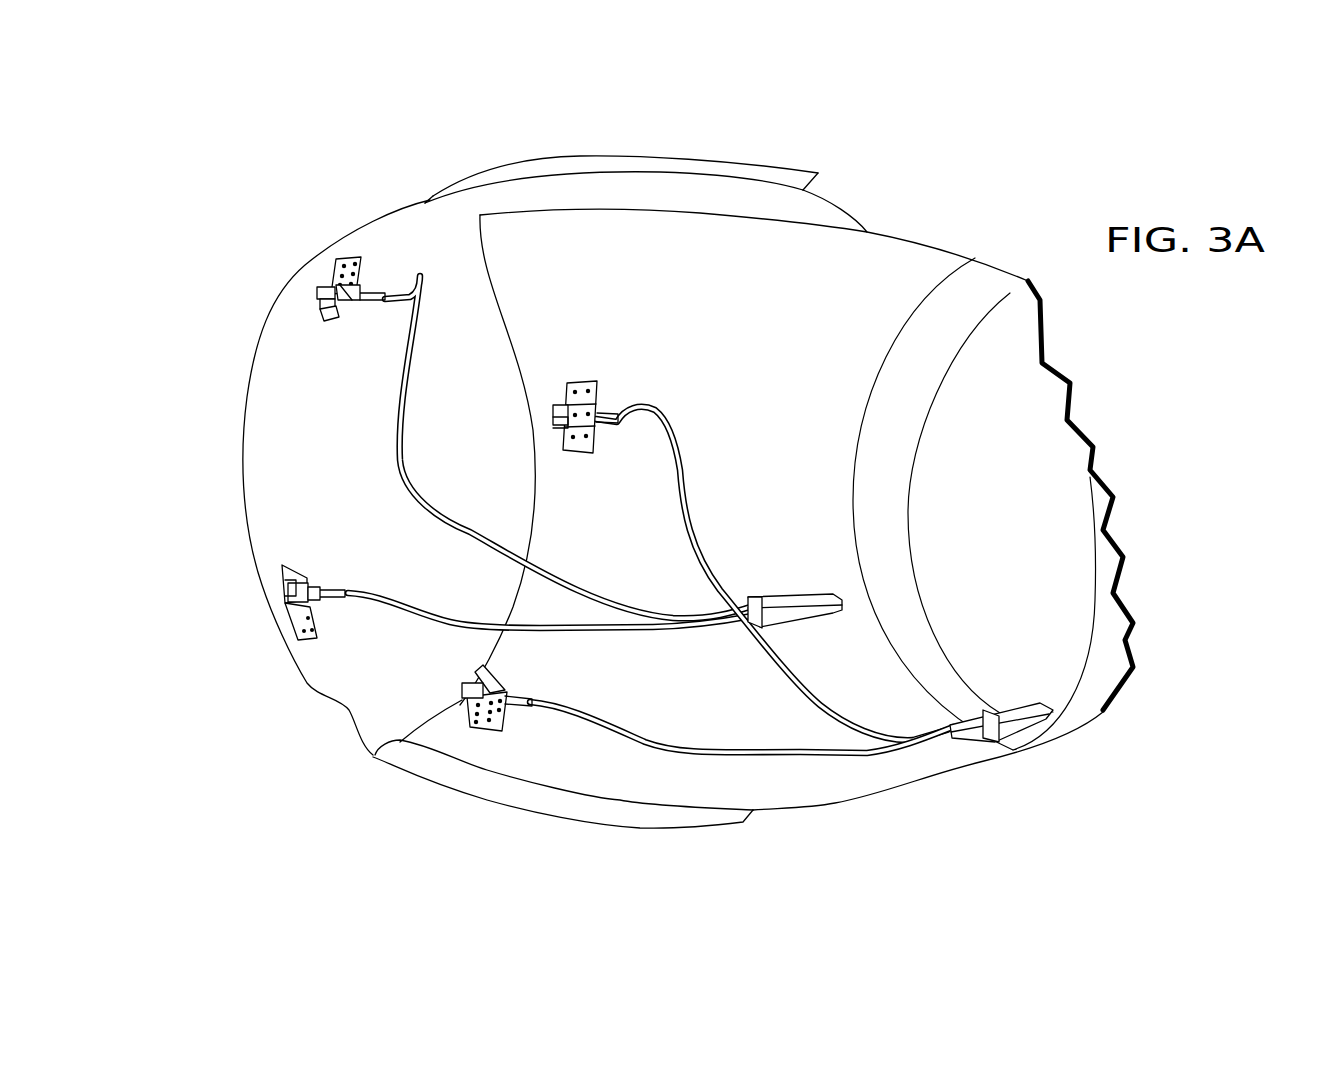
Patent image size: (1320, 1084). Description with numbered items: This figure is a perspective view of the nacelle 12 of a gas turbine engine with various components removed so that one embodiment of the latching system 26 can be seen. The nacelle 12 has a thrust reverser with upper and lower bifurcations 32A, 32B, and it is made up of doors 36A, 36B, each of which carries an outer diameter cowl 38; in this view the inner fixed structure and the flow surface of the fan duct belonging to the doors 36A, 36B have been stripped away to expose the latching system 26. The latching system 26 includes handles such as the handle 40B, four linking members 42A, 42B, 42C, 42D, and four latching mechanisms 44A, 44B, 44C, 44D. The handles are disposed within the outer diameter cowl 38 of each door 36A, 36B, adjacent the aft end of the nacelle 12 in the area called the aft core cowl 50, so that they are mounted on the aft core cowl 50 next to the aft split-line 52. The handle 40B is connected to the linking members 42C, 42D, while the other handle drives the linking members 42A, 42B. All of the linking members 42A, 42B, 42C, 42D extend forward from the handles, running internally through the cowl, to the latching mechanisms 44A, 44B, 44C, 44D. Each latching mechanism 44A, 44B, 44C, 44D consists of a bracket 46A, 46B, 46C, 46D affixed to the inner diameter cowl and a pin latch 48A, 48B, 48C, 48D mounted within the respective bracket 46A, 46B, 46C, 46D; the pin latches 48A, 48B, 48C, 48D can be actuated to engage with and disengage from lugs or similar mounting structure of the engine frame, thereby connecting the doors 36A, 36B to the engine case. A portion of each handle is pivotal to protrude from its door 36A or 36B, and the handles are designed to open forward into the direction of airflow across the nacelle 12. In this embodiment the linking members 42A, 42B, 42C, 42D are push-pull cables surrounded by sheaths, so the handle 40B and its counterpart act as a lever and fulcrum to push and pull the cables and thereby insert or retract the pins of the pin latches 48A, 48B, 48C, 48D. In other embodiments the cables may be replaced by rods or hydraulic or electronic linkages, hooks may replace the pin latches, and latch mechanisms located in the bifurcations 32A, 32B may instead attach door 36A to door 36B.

The nacelle 12 is at (907, 197).
The latching system 26 is at (973, 700).
The upper bifurcation 32A is at (811, 173).
The lower bifurcation 32B is at (765, 822).
The door 36A is at (963, 773).
The door 36B is at (241, 422).
The outer diameter cowl 38 is at (280, 650).
The handle 40B is at (796, 597).
The linking member 42A is at (633, 743).
The linking member 42B is at (818, 690).
The linking member 42C is at (453, 620).
The linking member 42D is at (428, 512).
The latching mechanism 44A is at (467, 684).
The latching mechanism 44B is at (548, 409).
The latching mechanism 44C is at (312, 576).
The latching mechanism 44D is at (345, 318).
The bracket 46A is at (488, 732).
The bracket 46B is at (567, 392).
The bracket 46C is at (315, 627).
The bracket 46D is at (362, 263).
The pin latch 48A is at (462, 688).
The pin latch 48B is at (555, 422).
The pin latch 48C is at (285, 583).
The pin latch 48D is at (318, 293).
The aft core cowl 50 is at (1105, 643).
The aft split-line 52 is at (1097, 570).